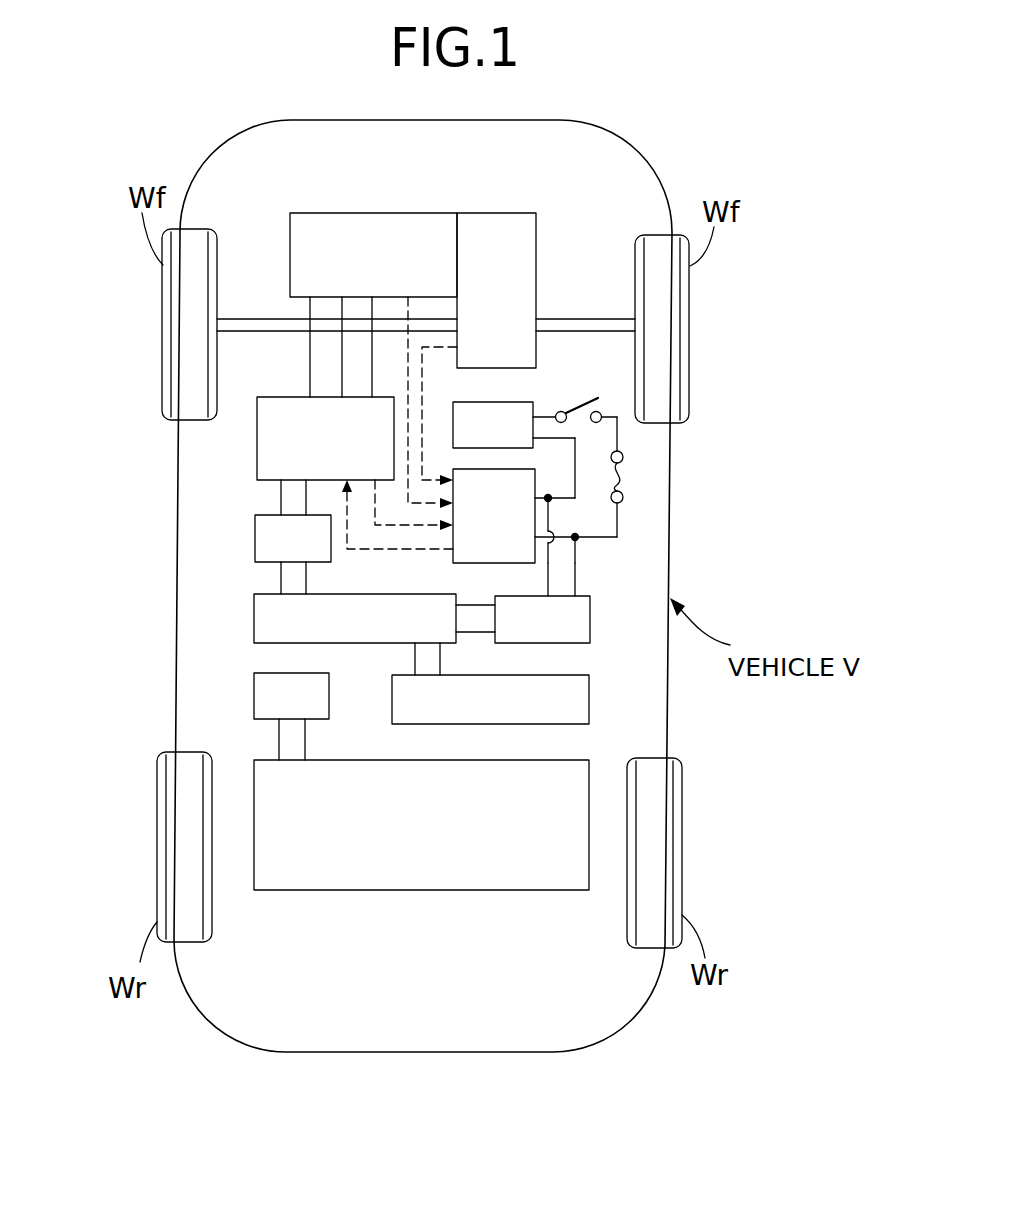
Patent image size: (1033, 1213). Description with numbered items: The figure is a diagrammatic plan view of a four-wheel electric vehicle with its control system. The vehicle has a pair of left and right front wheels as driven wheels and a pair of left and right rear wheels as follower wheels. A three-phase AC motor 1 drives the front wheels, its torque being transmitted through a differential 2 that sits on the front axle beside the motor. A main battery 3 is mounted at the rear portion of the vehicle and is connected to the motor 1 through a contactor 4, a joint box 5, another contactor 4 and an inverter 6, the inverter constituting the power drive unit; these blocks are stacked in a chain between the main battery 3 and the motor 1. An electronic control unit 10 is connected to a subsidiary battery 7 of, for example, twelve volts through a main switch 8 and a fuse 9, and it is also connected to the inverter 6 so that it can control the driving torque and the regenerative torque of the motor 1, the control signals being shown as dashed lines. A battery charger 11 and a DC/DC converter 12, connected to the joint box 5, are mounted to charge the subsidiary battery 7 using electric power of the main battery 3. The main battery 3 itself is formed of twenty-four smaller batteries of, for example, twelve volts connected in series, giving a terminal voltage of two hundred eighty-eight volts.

The three-phase AC motor 1 is at (370, 273).
The differential 2 is at (489, 303).
The main battery 3 is at (409, 840).
The contactor 4 is at (167, 560).
The joint box 5 is at (352, 628).
The inverter 6 is at (170, 476).
The subsidiary battery 7 is at (485, 435).
The main switch 8 is at (583, 405).
The fuse 9 is at (623, 474).
The electronic control unit 10 is at (481, 525).
The battery charger 11 is at (474, 711).
The DC/DC converter 12 is at (531, 630).